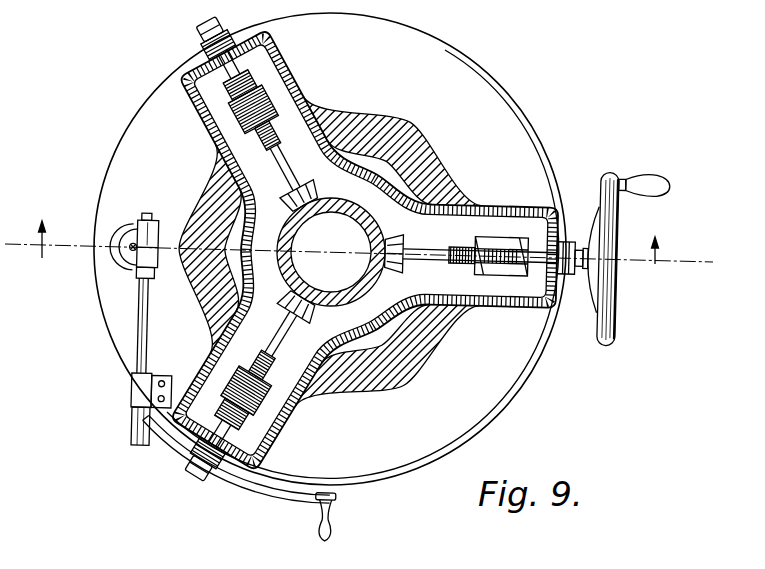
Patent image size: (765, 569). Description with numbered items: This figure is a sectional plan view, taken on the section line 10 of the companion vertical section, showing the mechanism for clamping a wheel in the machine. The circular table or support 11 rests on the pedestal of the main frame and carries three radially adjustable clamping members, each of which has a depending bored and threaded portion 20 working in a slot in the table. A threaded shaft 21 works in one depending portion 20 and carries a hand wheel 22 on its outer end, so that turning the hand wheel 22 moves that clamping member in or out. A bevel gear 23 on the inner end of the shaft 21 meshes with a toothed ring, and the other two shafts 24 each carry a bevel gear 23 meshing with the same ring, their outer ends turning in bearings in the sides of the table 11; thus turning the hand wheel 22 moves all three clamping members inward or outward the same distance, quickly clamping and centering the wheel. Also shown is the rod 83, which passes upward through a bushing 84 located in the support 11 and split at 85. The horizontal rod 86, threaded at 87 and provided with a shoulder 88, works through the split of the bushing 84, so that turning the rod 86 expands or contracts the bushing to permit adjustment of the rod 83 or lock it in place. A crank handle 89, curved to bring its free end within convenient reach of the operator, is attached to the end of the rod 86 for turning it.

The section line 10 is at (344, 256).
The table or support 11 is at (330, 249).
The depending bored and threaded portion 20 is at (257, 78).
The threaded shaft 21 is at (441, 259).
The hand wheel 22 is at (617, 222).
The bevel gear 23 is at (397, 243).
The shafts 24 is at (294, 189).
The rod 83 is at (131, 254).
The bushing 84 is at (125, 238).
The split 85 is at (159, 254).
The horizontal rod 86 is at (149, 337).
The thread 87 is at (146, 218).
The shoulder 88 is at (141, 283).
The crank handle 89 is at (232, 488).